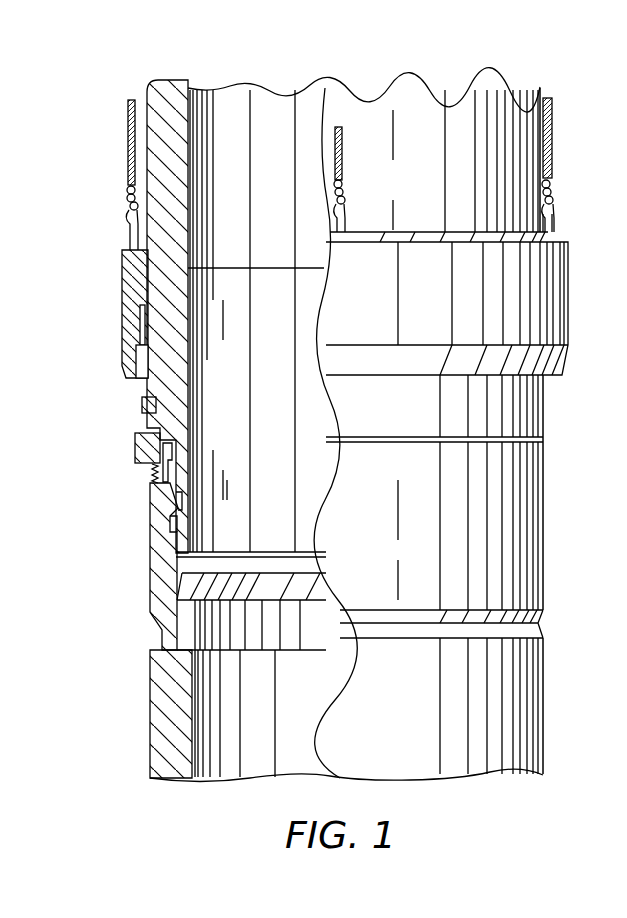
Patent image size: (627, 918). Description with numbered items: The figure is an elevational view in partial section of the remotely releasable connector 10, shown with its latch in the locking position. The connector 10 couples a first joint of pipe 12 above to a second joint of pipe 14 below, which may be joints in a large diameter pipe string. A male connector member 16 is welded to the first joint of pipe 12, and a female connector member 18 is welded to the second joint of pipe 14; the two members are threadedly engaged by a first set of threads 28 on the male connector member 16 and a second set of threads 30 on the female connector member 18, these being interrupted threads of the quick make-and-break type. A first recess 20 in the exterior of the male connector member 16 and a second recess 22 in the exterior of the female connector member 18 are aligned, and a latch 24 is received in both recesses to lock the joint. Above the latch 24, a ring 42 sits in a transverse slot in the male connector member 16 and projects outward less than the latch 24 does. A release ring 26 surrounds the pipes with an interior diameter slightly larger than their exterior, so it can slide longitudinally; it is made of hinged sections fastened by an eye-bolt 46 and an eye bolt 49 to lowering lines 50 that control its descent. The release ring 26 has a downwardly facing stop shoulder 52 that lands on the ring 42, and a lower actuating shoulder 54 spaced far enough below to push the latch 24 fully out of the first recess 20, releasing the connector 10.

The remotely releasable connector 10 is at (105, 377).
The first joint of pipe 12 is at (151, 87).
The second joint of pipe 14 is at (151, 730).
The male connector member 16 is at (234, 372).
The female connector member 18 is at (149, 512).
The first recess 20 is at (163, 443).
The second recess 22 is at (150, 470).
The latch 24 is at (135, 448).
The release ring 26 is at (121, 281).
The first set of threads 28 is at (172, 489).
The second set of threads 30 is at (172, 538).
The ring 42 is at (142, 405).
The eye-bolt 46 is at (552, 204).
The eye bolt 49 is at (370, 180).
The lowering lines 50 is at (342, 166).
The stop shoulder 52 is at (140, 312).
The actuating shoulder 54 is at (136, 347).